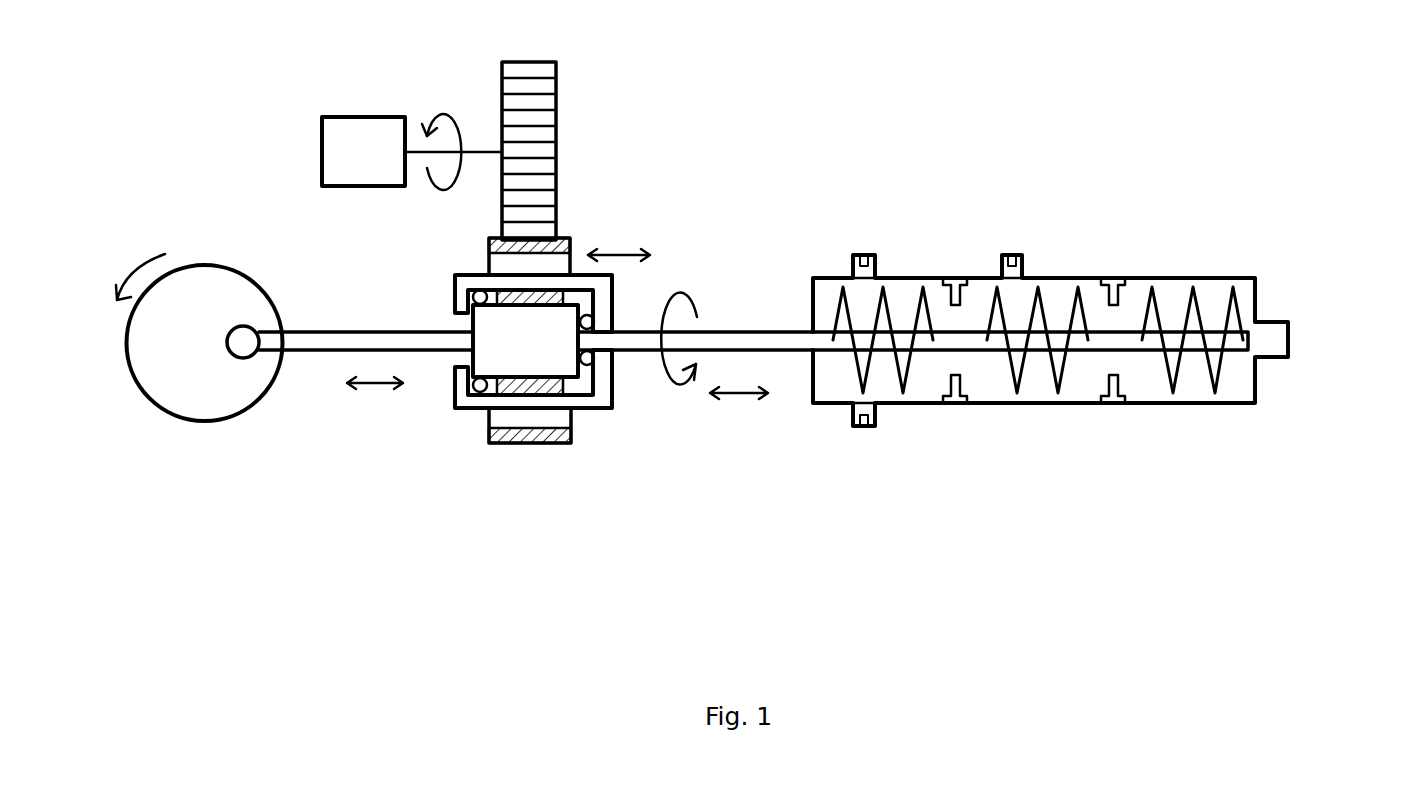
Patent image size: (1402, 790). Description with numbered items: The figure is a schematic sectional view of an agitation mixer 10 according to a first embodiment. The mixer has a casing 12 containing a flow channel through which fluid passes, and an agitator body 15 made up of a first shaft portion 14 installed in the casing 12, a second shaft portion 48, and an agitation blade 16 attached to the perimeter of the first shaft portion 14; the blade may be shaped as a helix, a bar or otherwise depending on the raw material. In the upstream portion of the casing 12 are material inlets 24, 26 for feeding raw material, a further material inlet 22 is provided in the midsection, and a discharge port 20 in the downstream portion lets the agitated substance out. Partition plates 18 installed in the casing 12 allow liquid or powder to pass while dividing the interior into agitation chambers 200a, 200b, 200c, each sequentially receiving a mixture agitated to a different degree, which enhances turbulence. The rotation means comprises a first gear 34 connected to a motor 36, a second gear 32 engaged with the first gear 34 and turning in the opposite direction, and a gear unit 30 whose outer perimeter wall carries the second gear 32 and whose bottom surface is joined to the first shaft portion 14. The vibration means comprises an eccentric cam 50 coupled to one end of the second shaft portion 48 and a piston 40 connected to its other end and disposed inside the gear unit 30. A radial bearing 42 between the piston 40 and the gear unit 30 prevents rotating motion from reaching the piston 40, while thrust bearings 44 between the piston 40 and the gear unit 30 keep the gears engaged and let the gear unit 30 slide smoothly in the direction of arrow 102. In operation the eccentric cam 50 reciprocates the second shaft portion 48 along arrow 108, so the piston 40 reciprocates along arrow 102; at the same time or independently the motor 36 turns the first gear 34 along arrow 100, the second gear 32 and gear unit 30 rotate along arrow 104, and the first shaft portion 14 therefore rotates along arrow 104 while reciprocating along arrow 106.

The agitation mixer 10 is at (1155, 230).
The casing 12 is at (1060, 278).
The first shaft portion 14 is at (972, 352).
The agitator body 15 is at (1160, 305).
The agitation blade 16 is at (1053, 382).
The partition plates 18 is at (955, 278).
The discharge port 20 is at (1278, 337).
The material inlet 22 is at (1012, 257).
The material inlet 24 is at (863, 257).
The material inlet 26 is at (865, 428).
The gear unit 30 is at (593, 410).
The second gear 32 is at (492, 249).
The first gear 34 is at (543, 123).
The motor 36 is at (357, 117).
The piston 40 is at (521, 350).
The radial bearing 42 is at (520, 290).
The thrust bearings 44 is at (473, 299).
The second shaft portion 48 is at (310, 352).
The eccentric cam 50 is at (187, 392).
The arrow 100 is at (443, 112).
The arrow 102 is at (630, 255).
The arrow 104 is at (697, 317).
The arrow 106 is at (739, 400).
The arrow 108 is at (373, 390).
The agitation chamber 200a is at (918, 405).
The agitation chamber 200b is at (1046, 405).
The agitation chamber 200c is at (1230, 405).